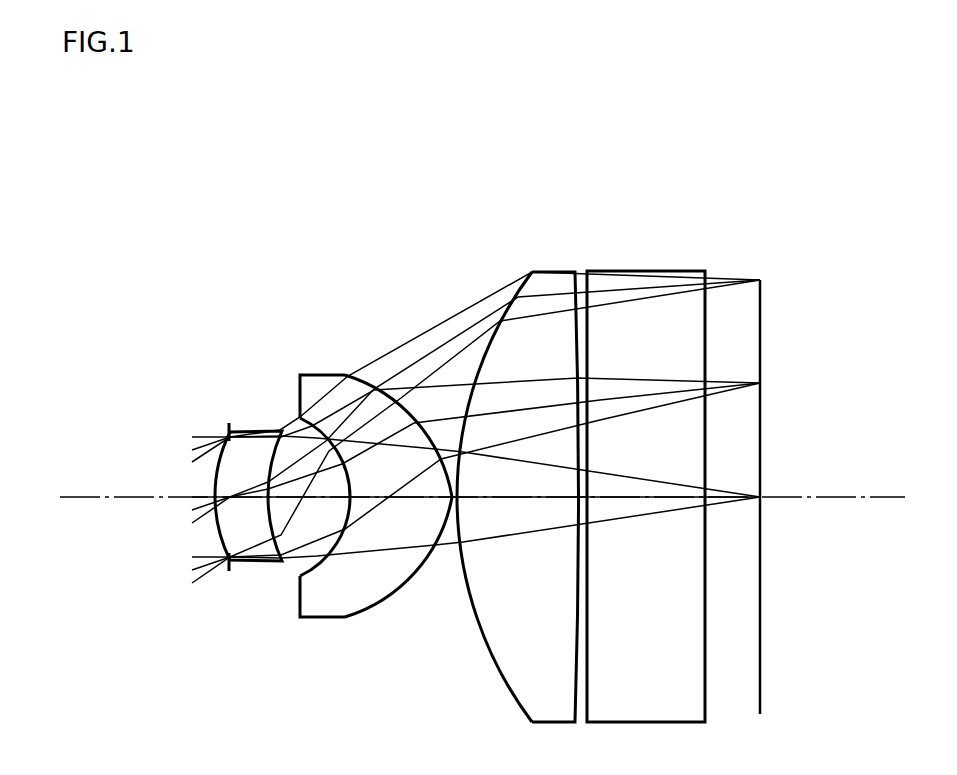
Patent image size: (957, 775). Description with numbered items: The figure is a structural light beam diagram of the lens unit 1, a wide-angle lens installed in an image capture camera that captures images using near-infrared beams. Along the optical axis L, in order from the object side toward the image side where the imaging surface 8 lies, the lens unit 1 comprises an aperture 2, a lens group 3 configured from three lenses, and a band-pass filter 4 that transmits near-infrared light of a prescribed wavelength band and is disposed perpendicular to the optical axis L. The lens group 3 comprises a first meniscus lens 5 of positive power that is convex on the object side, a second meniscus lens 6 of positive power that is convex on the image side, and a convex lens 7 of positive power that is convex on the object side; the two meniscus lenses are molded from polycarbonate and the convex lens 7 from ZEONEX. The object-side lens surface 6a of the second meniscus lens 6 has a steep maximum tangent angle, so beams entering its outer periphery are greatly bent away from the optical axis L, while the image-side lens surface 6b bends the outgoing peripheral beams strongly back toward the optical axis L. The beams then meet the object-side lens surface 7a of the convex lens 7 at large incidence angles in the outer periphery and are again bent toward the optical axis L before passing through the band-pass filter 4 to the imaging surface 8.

The lens unit 1 is at (766, 184).
The aperture 2 is at (228, 424).
The lens group 3 is at (272, 212).
The band-pass filter 4 is at (660, 271).
The first meniscus lens 5 is at (247, 429).
The second meniscus lens 6 is at (339, 436).
The lens surface 6a is at (300, 572).
The lens surface 6b is at (383, 598).
The convex lens 7 is at (490, 465).
The lens surface 7a is at (490, 647).
The imaging surface 8 is at (763, 315).
The optical axis L is at (850, 495).